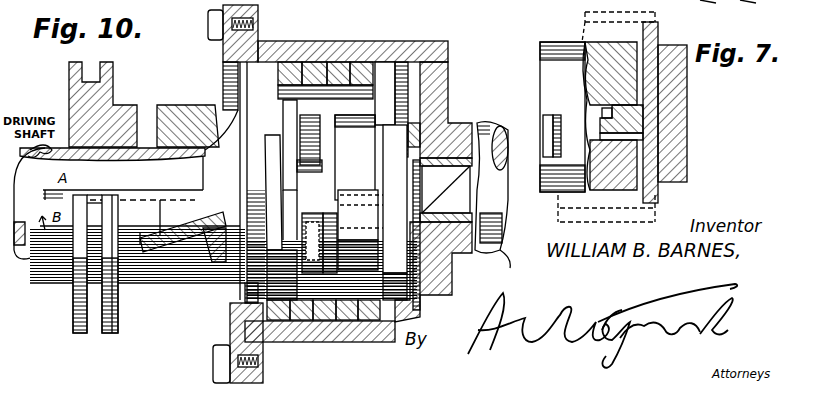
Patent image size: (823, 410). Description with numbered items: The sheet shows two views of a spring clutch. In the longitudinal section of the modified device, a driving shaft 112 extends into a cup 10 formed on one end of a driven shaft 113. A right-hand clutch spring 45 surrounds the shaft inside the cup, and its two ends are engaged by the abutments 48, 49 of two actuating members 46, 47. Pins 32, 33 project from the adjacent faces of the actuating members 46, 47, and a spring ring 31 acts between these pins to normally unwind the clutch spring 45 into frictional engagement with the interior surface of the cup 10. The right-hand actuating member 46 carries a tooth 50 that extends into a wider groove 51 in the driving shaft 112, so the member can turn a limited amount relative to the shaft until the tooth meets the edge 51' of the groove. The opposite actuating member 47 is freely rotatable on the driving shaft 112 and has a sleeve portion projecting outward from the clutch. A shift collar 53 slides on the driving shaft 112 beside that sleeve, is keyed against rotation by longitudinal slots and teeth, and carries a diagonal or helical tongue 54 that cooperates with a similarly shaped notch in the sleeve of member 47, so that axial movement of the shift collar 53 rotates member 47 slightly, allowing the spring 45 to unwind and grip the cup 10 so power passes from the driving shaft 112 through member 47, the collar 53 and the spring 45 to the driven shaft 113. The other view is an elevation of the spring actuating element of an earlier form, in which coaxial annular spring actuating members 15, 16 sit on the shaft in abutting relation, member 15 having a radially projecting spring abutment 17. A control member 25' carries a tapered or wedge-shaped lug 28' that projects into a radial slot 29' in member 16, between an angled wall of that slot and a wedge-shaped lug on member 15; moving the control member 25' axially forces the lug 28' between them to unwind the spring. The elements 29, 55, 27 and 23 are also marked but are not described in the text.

In FIG. 10, the cup 10 is at (428, 41).
In FIG. 7, the cup 10 is at (556, 222).
In FIG. 10, the ring gear 29 is at (328, 164).
In FIG. 10, the spring ring 31 is at (310, 115).
In FIG. 10, the clutch spring 45 is at (290, 62).
In FIG. 10, the abutment 49 is at (228, 100).
In FIG. 10, the abutment 48 is at (390, 137).
In FIG. 10, the groove 51 is at (492, 118).
In FIG. 10, the edge of slot 51' is at (366, 230).
In FIG. 10, the pin 33 is at (327, 165).
In FIG. 10, the pin 32 is at (307, 212).
In FIG. 10, the tooth 50 is at (396, 205).
In FIG. 10, the actuating member 46 is at (410, 283).
In FIG. 10, the driven shaft 113 is at (490, 203).
In FIG. 10, the driving shaft 112 is at (62, 240).
In FIG. 10, the shift collar 53 is at (103, 323).
In FIG. 10, the helical tongue 54 is at (158, 268).
In FIG. 10, the link 55 is at (210, 264).
In FIG. 10, the spring actuating member 47 is at (230, 297).
In FIG. 7, the spring actuating member 15 is at (548, 44).
In FIG. 7, the spring abutment 17 is at (545, 140).
In FIG. 7, the wedge-shaped lug 28' is at (669, 115).
In FIG. 7, the radial slot 29' is at (670, 143).
In FIG. 7, the control member 25' is at (692, 112).
In FIG. 7, the spring actuating member 16 is at (657, 190).
In FIG. 7, the member 27 is at (715, 4).
In FIG. 7, the member 23 is at (750, 4).